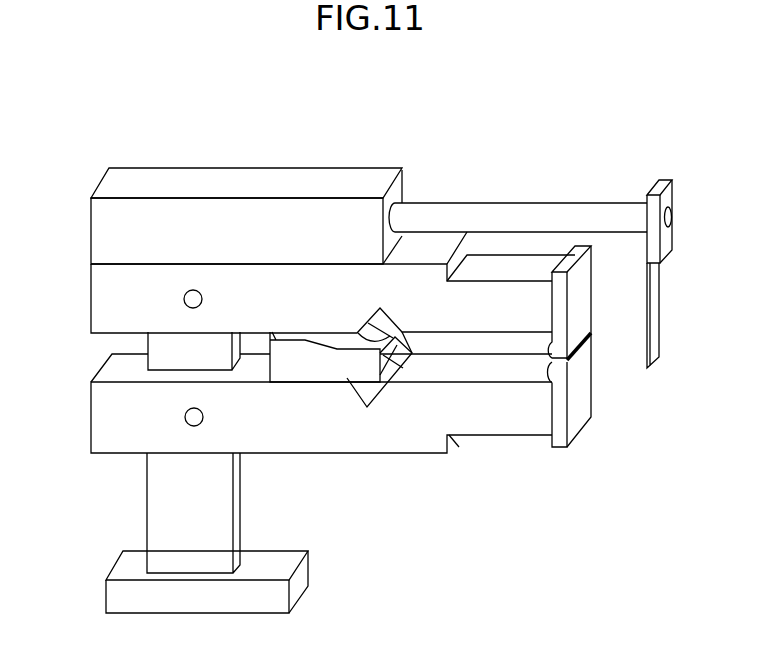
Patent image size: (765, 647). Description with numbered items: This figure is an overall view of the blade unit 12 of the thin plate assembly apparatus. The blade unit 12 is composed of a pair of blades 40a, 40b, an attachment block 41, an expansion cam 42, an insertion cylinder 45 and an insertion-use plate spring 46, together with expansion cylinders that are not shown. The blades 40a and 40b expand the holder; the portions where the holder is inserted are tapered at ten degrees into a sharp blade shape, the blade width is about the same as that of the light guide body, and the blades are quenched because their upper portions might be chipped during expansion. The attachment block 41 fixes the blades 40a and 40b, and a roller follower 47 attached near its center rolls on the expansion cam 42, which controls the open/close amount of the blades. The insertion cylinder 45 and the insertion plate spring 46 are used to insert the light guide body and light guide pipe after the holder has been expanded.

The blade unit 12 is at (335, 146).
The attachment block 41 is at (90, 413).
The insertion cylinder 45 is at (404, 184).
The insertion-use plate spring 46 is at (660, 328).
The blade 40a is at (585, 312).
The blade 40b is at (583, 370).
The expansion cam 42 is at (300, 370).
The roller follower 47 is at (407, 353).